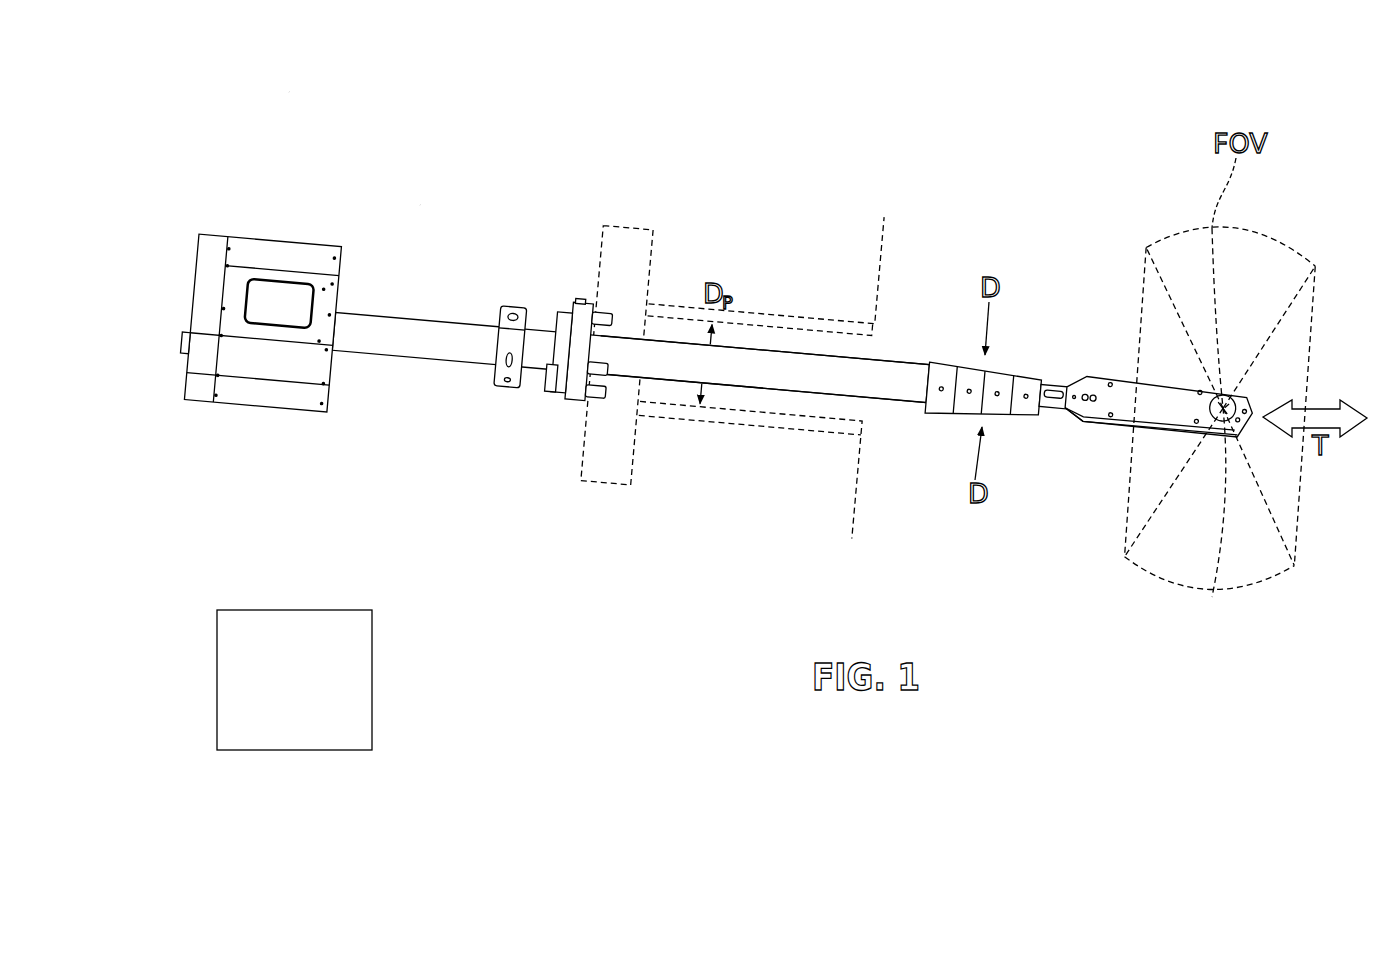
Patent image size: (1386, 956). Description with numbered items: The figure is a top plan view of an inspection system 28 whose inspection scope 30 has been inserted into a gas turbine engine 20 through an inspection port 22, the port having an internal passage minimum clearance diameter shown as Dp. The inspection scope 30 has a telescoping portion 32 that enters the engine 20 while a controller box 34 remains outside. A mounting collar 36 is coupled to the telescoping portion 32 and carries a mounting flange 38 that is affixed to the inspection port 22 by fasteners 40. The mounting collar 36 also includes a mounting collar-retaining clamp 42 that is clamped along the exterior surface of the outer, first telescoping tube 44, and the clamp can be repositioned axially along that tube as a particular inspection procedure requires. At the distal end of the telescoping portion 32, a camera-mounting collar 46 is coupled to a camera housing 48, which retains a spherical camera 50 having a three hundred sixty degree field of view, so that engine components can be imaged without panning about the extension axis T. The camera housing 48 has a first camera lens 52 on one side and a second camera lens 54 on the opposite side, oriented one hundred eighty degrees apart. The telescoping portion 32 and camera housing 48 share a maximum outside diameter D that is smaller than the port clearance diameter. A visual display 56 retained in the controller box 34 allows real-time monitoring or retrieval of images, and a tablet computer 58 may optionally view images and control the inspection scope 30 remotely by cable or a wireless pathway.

The gas turbine engine 20 is at (852, 497).
The inspection port 22 is at (607, 490).
The inspection system 28 is at (289, 92).
The inspection scope 30 is at (420, 205).
The telescoping portion 32 is at (899, 356).
The controller box 34 is at (273, 437).
The mounting collar 36 is at (540, 406).
The mounting flange 38 is at (582, 304).
The fasteners 40 is at (601, 304).
The mounting collar-retaining clamp 42 is at (501, 306).
The first telescoping tube 44 is at (424, 360).
The camera-mounting collar 46 is at (1058, 389).
The camera housing 48 is at (1130, 436).
The spherical camera 50 is at (1183, 399).
The first camera lens 52 is at (1237, 398).
The second camera lens 54 is at (1213, 594).
The visual display 56 is at (275, 305).
The tablet computer 58 is at (372, 678).